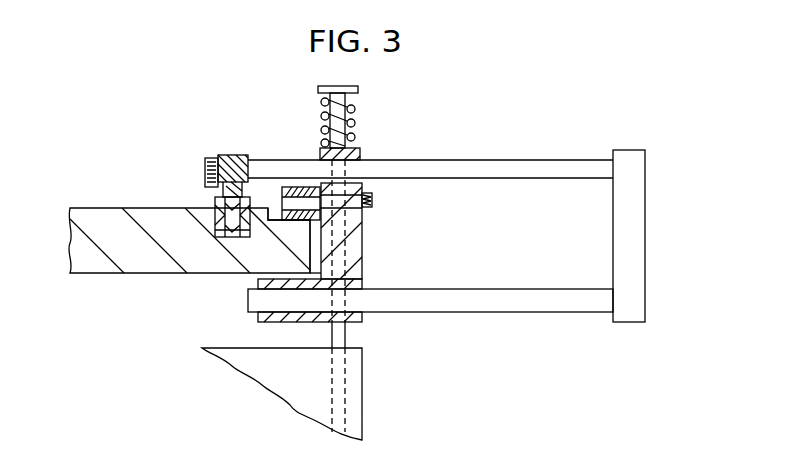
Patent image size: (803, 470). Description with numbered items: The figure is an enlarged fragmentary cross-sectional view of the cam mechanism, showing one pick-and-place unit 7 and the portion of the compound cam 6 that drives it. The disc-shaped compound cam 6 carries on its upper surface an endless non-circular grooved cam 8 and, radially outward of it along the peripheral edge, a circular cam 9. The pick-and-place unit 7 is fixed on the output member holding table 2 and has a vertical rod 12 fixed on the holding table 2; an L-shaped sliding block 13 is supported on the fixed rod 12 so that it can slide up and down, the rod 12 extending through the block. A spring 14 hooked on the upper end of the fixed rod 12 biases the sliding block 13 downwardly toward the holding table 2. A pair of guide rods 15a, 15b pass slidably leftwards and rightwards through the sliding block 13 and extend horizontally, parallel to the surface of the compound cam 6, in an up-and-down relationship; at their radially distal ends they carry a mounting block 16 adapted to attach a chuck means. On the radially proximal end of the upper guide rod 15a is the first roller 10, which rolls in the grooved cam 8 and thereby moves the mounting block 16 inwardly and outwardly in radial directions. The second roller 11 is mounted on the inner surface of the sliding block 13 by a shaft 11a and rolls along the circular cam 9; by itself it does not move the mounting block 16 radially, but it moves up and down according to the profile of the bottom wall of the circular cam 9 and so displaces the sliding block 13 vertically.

The output member holding table 2 is at (350, 405).
The compound cam 6 is at (100, 262).
The pick-and-place unit 7 is at (469, 145).
The grooved cam 8 is at (230, 237).
The circular cam 9 is at (268, 222).
The first roller 10 is at (215, 216).
The second roller 11 is at (292, 187).
The shaft 11a is at (372, 204).
The vertical rod 12 is at (340, 335).
The sliding block 13 is at (355, 228).
The spring 14 is at (358, 103).
The upper guide rod 15a is at (548, 170).
The lower guide rod 15b is at (512, 300).
The mounting block 16 is at (635, 232).